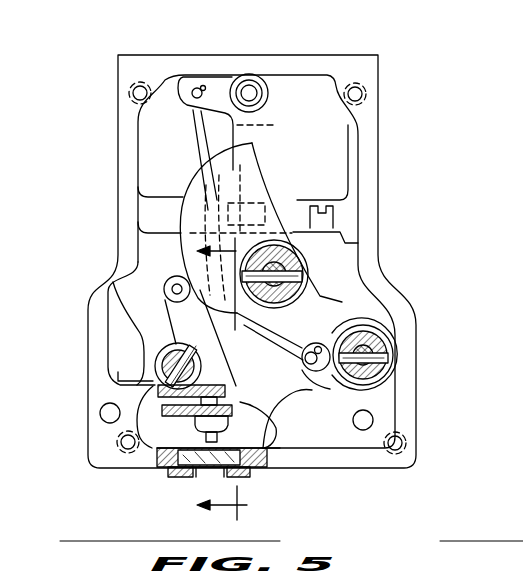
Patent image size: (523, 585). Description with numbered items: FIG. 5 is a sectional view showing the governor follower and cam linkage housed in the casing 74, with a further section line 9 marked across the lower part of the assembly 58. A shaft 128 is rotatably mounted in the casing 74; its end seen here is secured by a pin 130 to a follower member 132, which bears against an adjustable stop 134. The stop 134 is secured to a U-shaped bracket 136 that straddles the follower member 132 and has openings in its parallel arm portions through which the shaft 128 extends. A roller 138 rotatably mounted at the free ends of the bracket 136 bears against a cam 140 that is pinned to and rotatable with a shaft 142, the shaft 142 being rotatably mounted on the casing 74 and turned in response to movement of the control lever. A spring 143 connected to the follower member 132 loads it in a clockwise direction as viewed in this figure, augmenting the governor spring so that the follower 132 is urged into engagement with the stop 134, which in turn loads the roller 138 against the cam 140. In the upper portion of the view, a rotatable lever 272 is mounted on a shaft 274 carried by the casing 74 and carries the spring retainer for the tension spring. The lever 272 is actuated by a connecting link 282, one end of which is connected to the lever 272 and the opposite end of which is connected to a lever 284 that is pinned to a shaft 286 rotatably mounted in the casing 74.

The section line 9- 9 is at (206, 379).
The lock assembly 58 is at (383, 236).
The casing 74 is at (413, 395).
The shaft 128 is at (158, 360).
The pin 130 is at (195, 357).
The follower member 132 is at (231, 384).
The adjustable stop 134 is at (229, 404).
The U-shaped bracket 136 is at (240, 403).
The roller 138 is at (165, 290).
The cam 140 is at (193, 213).
The shaft 142 is at (300, 245).
The spring 143 is at (115, 373).
The rotatable lever 272 is at (217, 83).
The shaft 274 is at (250, 91).
The connecting link 282 is at (193, 127).
The lever 284 is at (327, 332).
The shaft 286 is at (378, 348).